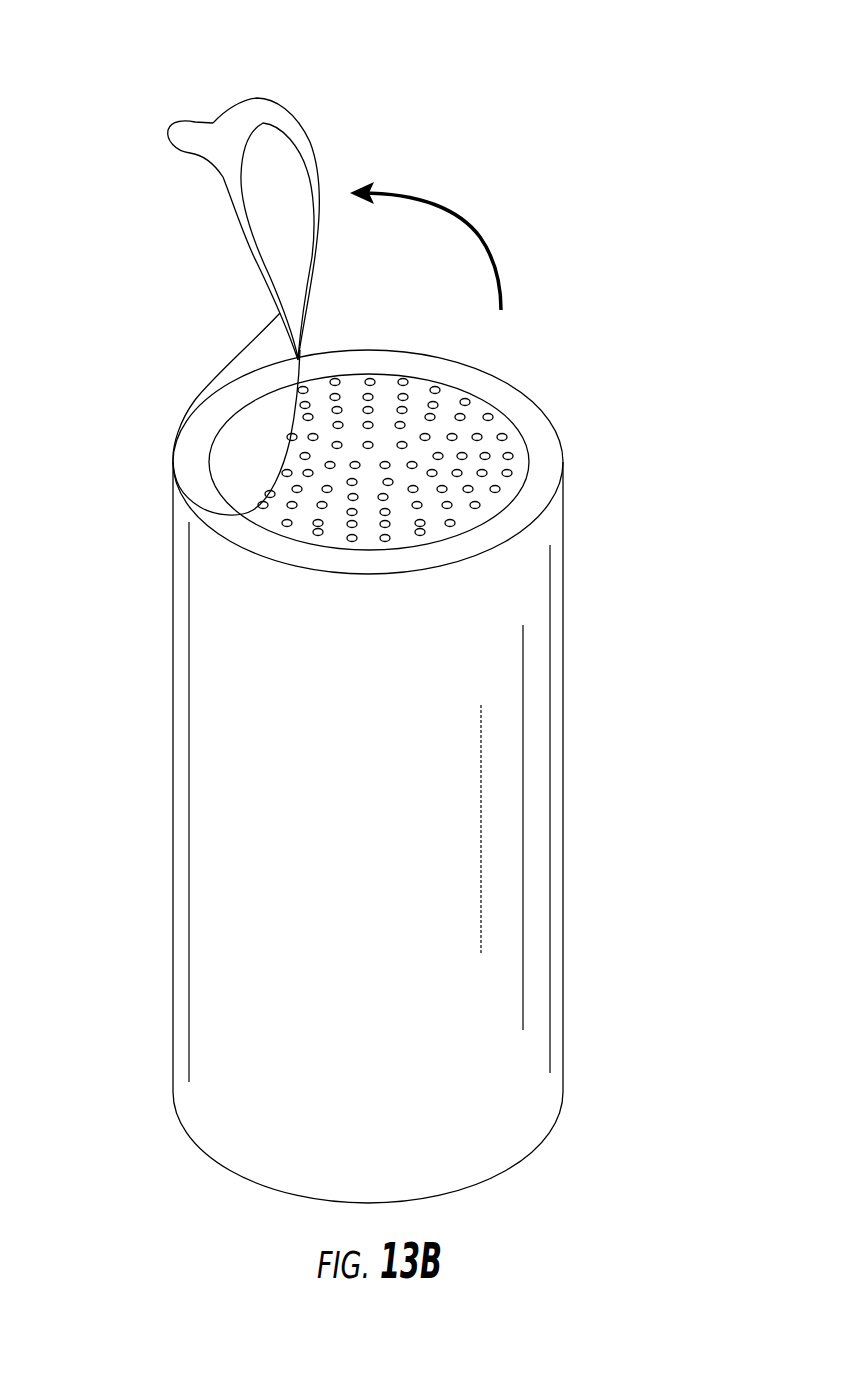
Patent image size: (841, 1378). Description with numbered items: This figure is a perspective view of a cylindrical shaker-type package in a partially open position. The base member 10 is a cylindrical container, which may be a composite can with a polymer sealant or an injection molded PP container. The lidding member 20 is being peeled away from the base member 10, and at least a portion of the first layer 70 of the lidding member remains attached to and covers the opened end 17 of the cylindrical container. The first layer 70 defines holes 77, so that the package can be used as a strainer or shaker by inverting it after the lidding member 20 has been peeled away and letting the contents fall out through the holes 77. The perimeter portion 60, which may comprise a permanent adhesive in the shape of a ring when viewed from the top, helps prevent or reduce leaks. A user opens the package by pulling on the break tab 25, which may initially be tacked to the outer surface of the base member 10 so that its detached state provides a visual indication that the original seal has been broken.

The base member 10 is at (540, 808).
The opened end 17 is at (520, 353).
The lidding member 20 is at (204, 268).
The break tab 25 is at (190, 132).
The perimeter portion 60 is at (262, 121).
The first layer 70 is at (500, 418).
The holes 77 is at (369, 406).